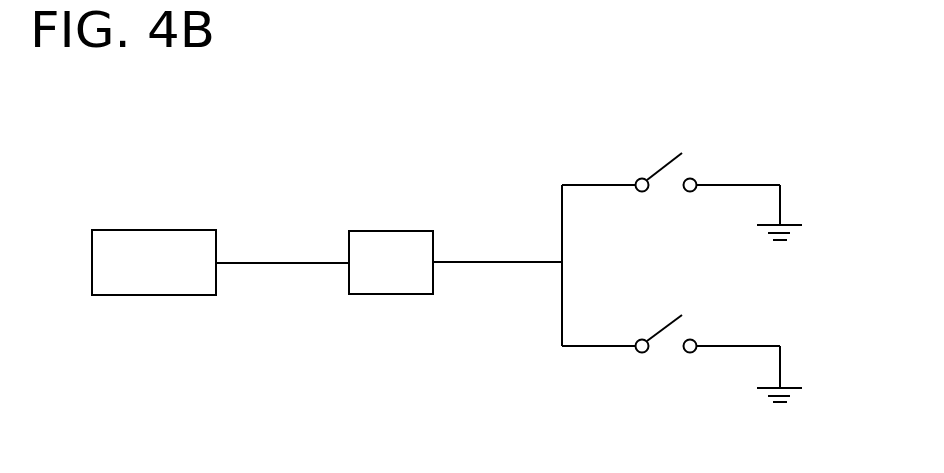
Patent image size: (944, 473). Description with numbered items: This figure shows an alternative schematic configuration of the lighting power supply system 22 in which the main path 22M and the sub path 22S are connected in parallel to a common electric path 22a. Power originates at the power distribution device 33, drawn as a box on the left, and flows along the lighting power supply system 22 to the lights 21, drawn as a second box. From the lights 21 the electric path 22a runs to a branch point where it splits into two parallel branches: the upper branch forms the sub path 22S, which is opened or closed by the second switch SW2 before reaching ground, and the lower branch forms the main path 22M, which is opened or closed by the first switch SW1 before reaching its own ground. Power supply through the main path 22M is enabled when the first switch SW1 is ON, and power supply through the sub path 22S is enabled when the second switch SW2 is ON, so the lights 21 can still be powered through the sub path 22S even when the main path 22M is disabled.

The power distribution device 33 is at (155, 230).
The lighting power supply system 22 is at (275, 248).
The lights 21 is at (390, 231).
The electric path 22a is at (482, 262).
The second switch SW2 is at (639, 178).
The first switch SW1 is at (640, 352).
The sub path 22S is at (728, 185).
The main path 22M is at (738, 348).